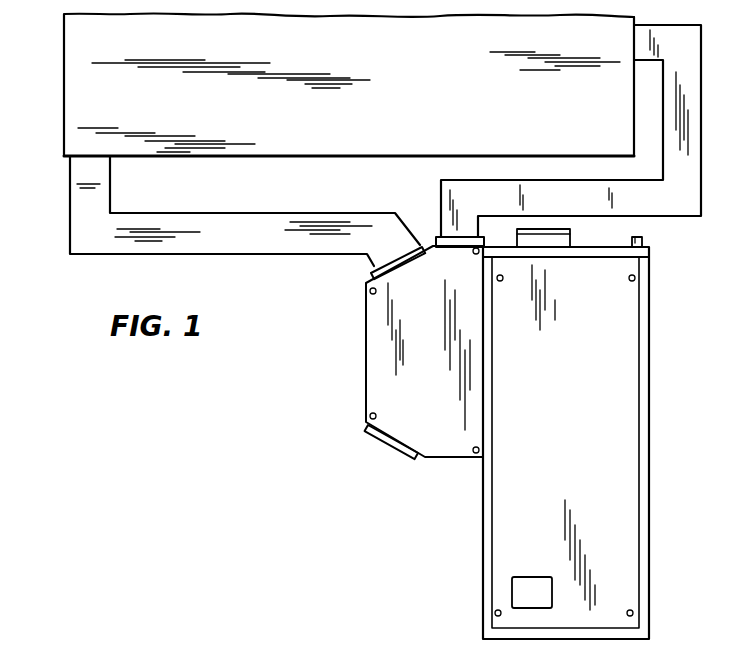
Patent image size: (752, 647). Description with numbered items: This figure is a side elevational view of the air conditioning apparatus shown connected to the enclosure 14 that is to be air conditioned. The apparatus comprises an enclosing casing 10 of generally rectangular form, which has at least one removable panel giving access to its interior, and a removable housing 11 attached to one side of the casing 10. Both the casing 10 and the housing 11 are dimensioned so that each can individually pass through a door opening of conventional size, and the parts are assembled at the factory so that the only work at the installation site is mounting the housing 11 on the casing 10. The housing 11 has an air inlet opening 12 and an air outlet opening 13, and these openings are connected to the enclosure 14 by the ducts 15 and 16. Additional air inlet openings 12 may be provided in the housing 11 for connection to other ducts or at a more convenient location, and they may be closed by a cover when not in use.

The enclosing casing 10 is at (482, 522).
The removable housing 11 is at (362, 388).
The air inlet opening 12 is at (372, 262).
The air outlet opening 13 is at (436, 237).
The enclosure 14 is at (72, 96).
The duct 15 is at (318, 201).
The duct 16 is at (448, 196).